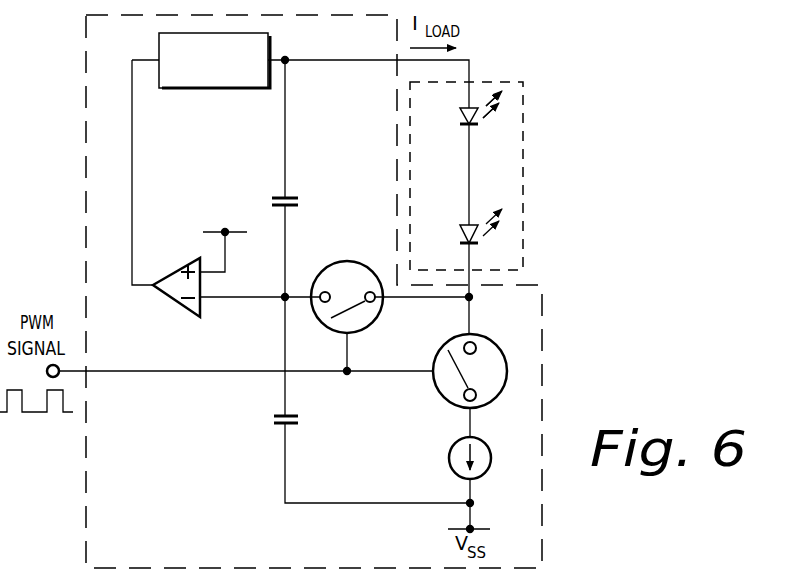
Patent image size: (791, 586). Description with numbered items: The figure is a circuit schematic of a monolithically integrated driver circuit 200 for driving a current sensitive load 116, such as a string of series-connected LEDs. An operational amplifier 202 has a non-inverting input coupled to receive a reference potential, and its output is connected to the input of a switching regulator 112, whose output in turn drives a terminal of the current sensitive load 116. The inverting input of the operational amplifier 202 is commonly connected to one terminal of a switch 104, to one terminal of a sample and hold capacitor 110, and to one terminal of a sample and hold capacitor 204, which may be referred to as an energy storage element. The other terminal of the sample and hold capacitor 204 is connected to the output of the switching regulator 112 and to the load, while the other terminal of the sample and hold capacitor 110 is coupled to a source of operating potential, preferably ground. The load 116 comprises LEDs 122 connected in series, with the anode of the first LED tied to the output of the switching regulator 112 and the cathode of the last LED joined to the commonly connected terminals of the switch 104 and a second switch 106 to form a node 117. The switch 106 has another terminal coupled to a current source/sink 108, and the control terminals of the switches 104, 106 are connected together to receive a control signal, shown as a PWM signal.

The driver circuit 200 is at (86, 217).
The switching regulator 112 is at (210, 95).
The sample and hold capacitor 204 is at (298, 197).
The sample and hold capacitor 110 is at (298, 415).
The operational amplifier 202 is at (181, 268).
The switch 104 is at (348, 260).
The current sensitive load 116 is at (523, 210).
The LED 122 is at (478, 126).
The node 117 is at (472, 299).
The switch 106 is at (440, 400).
The current source/sink 108 is at (450, 464).